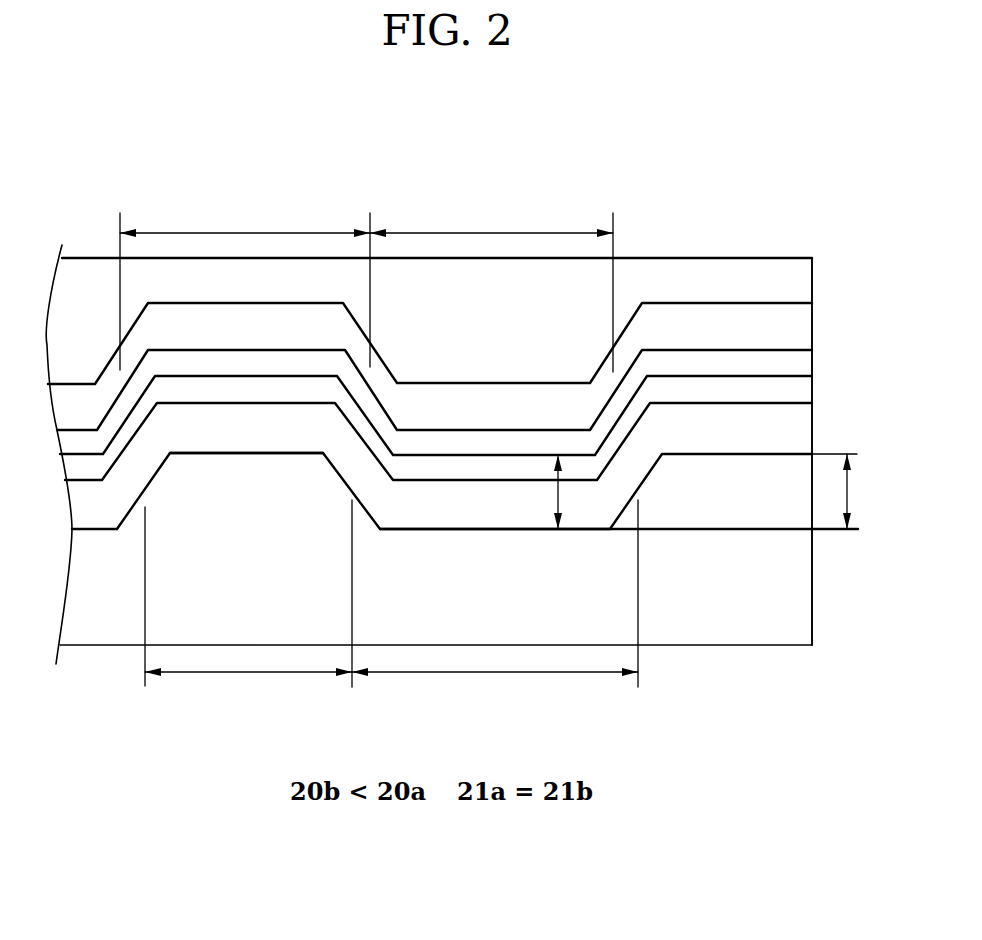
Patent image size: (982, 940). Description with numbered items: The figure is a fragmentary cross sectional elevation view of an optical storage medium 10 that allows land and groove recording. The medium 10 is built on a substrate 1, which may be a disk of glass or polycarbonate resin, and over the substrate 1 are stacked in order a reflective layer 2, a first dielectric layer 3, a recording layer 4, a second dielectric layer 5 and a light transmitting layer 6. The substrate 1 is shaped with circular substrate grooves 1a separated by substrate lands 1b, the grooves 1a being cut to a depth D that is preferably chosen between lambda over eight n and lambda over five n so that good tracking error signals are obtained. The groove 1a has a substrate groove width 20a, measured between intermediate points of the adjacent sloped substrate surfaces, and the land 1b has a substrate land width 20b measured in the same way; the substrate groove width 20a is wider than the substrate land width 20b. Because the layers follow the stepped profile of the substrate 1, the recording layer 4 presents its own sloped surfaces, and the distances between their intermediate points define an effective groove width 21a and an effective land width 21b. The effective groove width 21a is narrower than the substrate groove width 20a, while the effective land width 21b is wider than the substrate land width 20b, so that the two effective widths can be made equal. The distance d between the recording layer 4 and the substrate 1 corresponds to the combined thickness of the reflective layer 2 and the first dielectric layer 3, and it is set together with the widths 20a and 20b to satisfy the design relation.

The substrate 1 is at (812, 587).
The substrate groove 1a is at (446, 531).
The substrate land 1b is at (237, 455).
The reflective layer 2 is at (812, 435).
The first dielectric layer 3 is at (812, 390).
The recording layer 4 is at (812, 360).
The second dielectric layer 5 is at (815, 327).
The light transmitting layer 6 is at (815, 282).
The optical storage medium 10 is at (718, 236).
The substrate groove width 20a is at (495, 610).
The substrate land width 20b is at (248, 610).
The effective groove width 21a is at (491, 284).
The effective land width 21b is at (245, 283).
The distance between recording layer and substrate d is at (566, 492).
The depth of grooves D is at (858, 491).